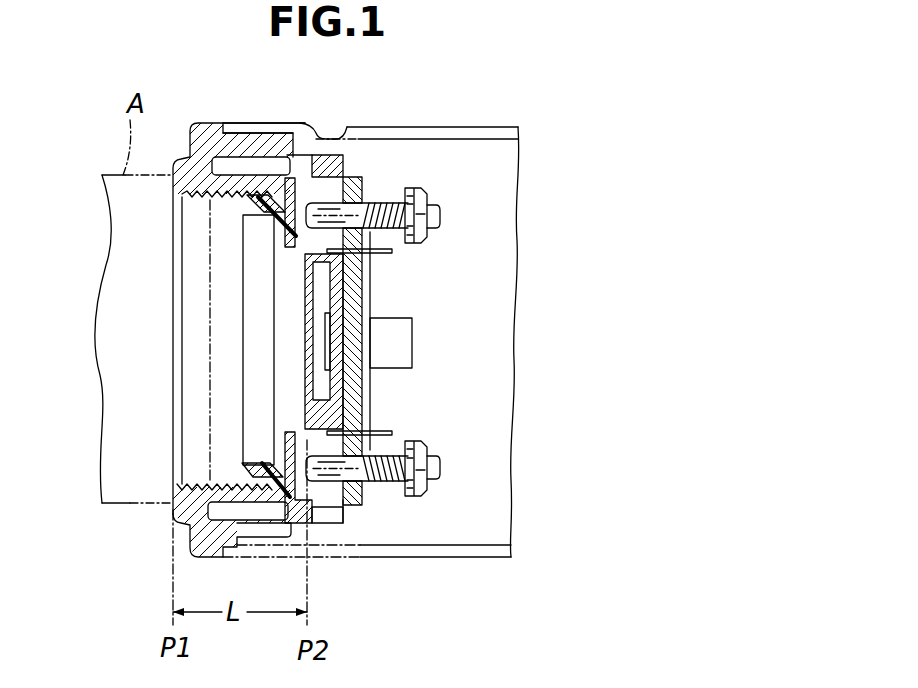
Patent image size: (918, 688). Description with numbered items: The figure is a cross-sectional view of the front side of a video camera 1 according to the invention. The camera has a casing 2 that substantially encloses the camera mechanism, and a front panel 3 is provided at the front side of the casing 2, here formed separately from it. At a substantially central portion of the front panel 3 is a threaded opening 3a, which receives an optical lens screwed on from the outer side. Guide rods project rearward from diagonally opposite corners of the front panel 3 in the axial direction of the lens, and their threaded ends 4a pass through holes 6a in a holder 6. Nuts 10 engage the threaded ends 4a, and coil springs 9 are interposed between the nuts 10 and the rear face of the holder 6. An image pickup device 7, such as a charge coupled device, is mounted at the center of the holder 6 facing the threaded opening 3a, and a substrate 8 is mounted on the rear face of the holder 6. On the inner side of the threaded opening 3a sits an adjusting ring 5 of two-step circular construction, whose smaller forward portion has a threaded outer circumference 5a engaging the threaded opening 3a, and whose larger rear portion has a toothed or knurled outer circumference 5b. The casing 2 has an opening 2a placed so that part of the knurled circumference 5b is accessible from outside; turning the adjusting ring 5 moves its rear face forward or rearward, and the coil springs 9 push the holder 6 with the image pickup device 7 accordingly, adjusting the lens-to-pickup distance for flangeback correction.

The video camera 1 is at (381, 605).
The casing 2 is at (498, 128).
The opening 2a is at (331, 127).
The front panel 3 is at (168, 512).
The threaded opening 3a is at (235, 197).
The threaded ends 4a is at (441, 215).
The adjusting ring 5 is at (343, 532).
The threaded outer circumference 5a is at (257, 202).
The toothed or knurled outer circumference 5b is at (313, 127).
The holder 6 is at (358, 508).
The holes 6a is at (347, 197).
The image pickup device 7 is at (331, 385).
The substrate 8 is at (371, 293).
The coil springs 9 is at (382, 200).
The nuts 10 is at (428, 192).